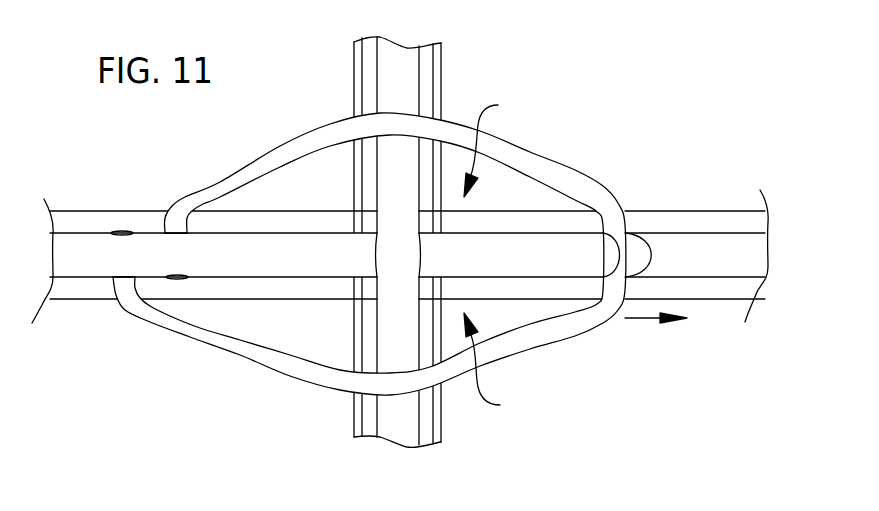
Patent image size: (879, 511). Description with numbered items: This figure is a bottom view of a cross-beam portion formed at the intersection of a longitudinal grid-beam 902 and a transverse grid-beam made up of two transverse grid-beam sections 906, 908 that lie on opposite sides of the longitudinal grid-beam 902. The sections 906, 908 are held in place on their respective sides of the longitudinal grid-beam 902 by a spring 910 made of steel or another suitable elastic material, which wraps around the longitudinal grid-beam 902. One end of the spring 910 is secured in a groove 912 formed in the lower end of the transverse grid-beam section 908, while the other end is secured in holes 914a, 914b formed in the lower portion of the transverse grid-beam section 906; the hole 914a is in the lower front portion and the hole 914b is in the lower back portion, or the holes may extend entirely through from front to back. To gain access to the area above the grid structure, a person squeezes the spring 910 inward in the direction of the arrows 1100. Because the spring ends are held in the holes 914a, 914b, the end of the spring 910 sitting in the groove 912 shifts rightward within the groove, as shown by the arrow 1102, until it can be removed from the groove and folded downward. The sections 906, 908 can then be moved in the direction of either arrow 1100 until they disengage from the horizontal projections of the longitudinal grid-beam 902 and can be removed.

The longitudinal grid-beam 902 is at (407, 73).
The transverse grid-beam section 906 is at (97, 243).
The transverse grid-beam section 908 is at (700, 255).
The spring 910 is at (540, 160).
The groove 912 is at (638, 255).
The hole 914a is at (165, 232).
The hole 914b is at (112, 279).
The arrows 1100 is at (503, 255).
The arrow 1102 is at (640, 320).